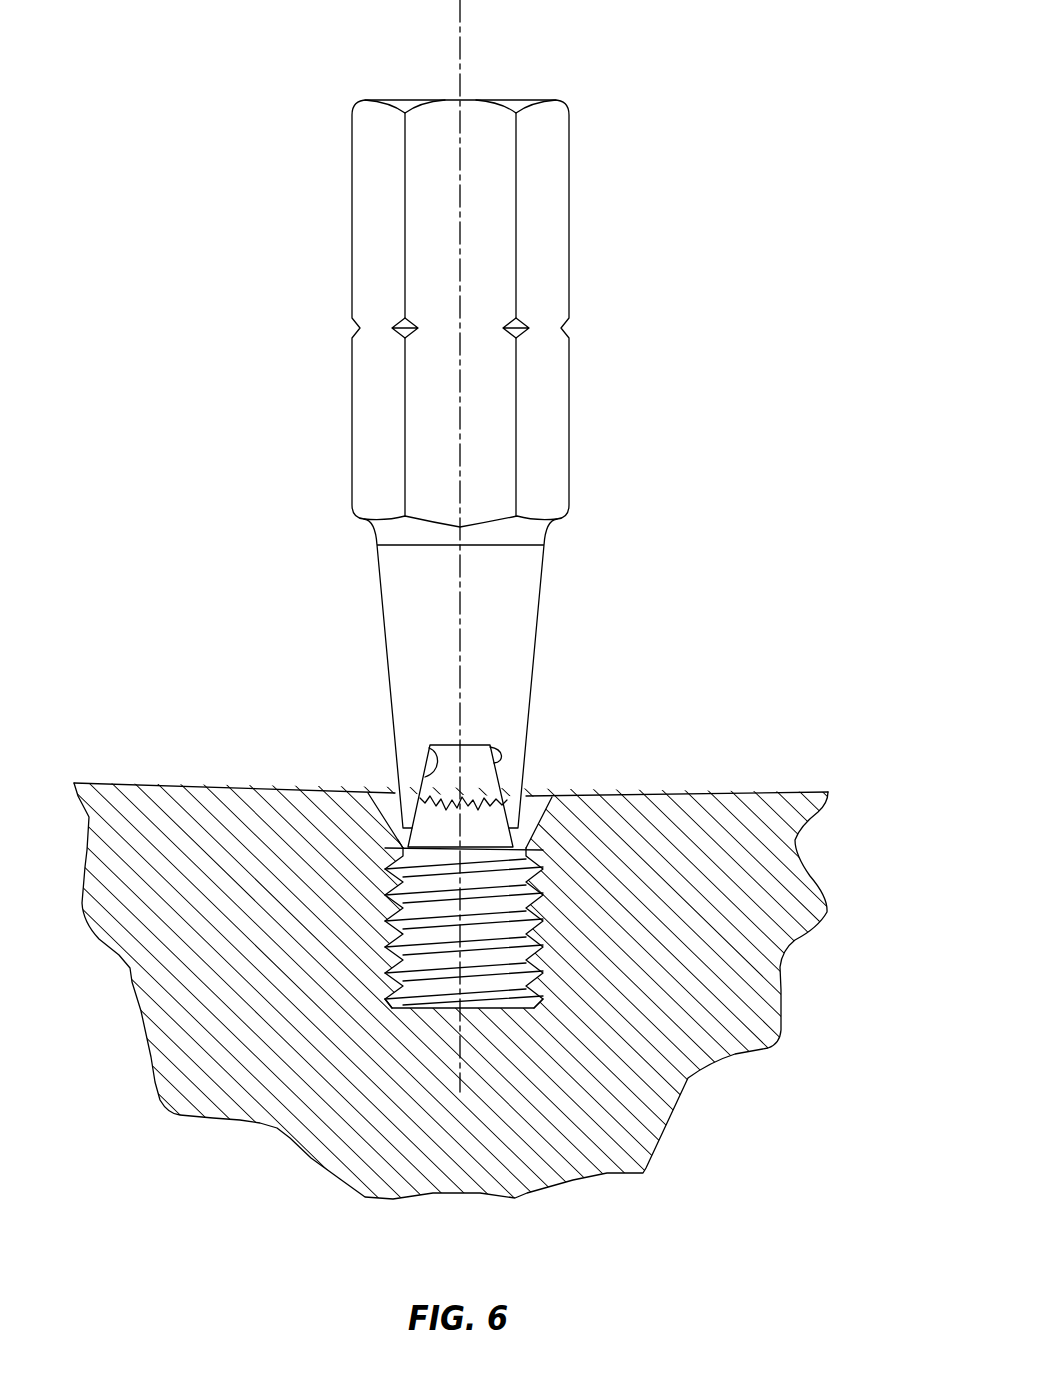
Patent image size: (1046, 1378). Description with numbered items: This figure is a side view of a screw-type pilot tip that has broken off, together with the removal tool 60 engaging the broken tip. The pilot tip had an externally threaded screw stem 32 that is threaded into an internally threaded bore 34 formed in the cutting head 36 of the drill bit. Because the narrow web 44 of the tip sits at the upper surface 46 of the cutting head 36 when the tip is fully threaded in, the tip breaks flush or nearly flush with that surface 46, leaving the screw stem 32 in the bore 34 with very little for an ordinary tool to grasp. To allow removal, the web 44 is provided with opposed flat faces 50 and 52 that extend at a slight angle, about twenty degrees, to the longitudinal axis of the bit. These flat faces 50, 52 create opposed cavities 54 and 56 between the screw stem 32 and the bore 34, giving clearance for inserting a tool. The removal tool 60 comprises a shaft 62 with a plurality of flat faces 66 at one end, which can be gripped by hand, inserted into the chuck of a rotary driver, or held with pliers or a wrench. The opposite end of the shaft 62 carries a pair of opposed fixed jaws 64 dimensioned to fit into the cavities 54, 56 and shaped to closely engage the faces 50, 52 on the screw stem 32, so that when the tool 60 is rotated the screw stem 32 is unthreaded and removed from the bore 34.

The removal tool 60 is at (582, 147).
The flat faces 66 is at (367, 265).
The shaft 62 is at (527, 576).
The opposed fixed jaws 64 is at (483, 745).
The narrow web 44 is at (493, 813).
The cutting head 36 is at (785, 857).
The upper surface 46 is at (682, 785).
The externally threaded screw stem 32 is at (530, 884).
The internally threaded bore 34 is at (527, 978).
The cavity 54 is at (525, 815).
The flat face 52 is at (548, 832).
The cavity 56 is at (387, 800).
The flat face 50 is at (402, 843).